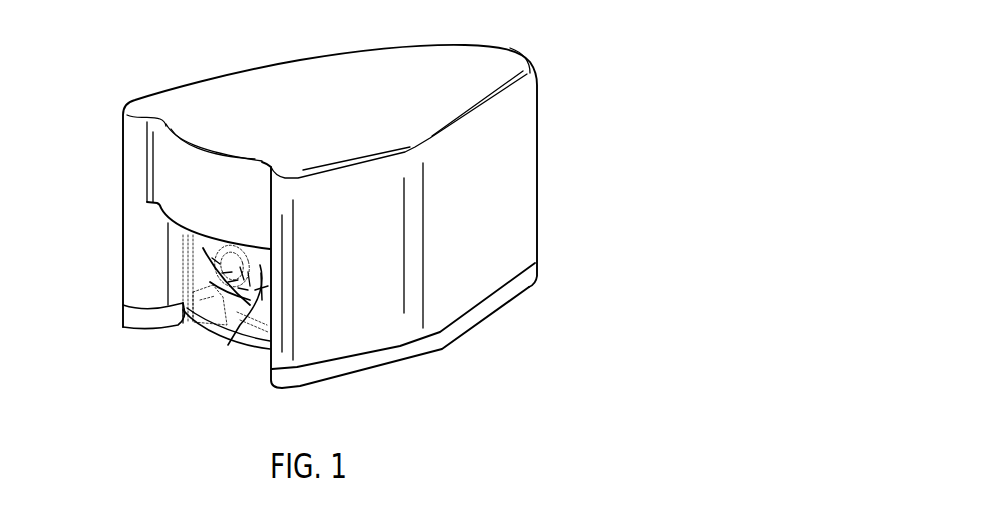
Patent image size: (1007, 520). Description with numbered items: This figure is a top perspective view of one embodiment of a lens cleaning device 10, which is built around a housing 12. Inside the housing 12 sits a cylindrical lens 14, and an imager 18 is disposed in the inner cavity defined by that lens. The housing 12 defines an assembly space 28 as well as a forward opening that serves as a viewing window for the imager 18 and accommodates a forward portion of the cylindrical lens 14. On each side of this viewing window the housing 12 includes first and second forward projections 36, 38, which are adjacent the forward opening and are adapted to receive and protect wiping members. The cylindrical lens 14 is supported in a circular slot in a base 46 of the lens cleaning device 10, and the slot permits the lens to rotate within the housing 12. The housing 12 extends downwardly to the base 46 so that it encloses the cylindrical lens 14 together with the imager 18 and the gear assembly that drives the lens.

The lens cleaning device 10 is at (575, 32).
The housing 12 is at (515, 195).
The cylindrical lens 14 is at (195, 320).
The imager 18 is at (263, 300).
The assembly space 28 is at (207, 248).
The first forward projection 36 is at (133, 262).
The second forward projection 38 is at (273, 360).
The base 46 is at (392, 357).